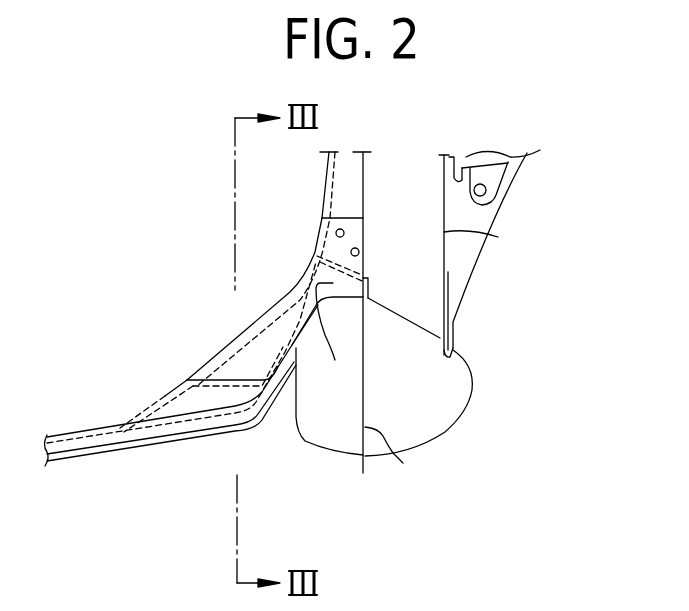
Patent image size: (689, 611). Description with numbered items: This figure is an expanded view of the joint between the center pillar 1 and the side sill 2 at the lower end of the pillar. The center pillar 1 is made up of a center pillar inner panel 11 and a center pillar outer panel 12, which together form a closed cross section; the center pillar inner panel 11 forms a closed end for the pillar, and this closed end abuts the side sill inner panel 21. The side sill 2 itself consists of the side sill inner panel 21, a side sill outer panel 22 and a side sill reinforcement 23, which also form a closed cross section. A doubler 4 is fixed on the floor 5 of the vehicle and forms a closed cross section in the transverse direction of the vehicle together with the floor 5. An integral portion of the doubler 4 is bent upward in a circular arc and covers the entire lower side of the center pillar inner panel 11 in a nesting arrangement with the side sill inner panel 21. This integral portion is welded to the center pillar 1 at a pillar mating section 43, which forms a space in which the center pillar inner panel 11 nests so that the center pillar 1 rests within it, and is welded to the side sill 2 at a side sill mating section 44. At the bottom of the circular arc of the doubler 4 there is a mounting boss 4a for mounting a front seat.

The center pillar 1 is at (408, 170).
The side sill 2 is at (478, 382).
The doubler 4 is at (65, 437).
The mounting boss 4a is at (243, 379).
The floor 5 is at (155, 453).
The center pillar inner panel 11 is at (345, 197).
The center pillar outer panel 12 is at (498, 237).
The side sill inner panel 21 is at (303, 443).
The side sill outer panel 22 is at (459, 413).
The side sill reinforcement 23 is at (403, 463).
The pillar mating section 43 is at (352, 237).
The side sill mating section 44 is at (330, 339).